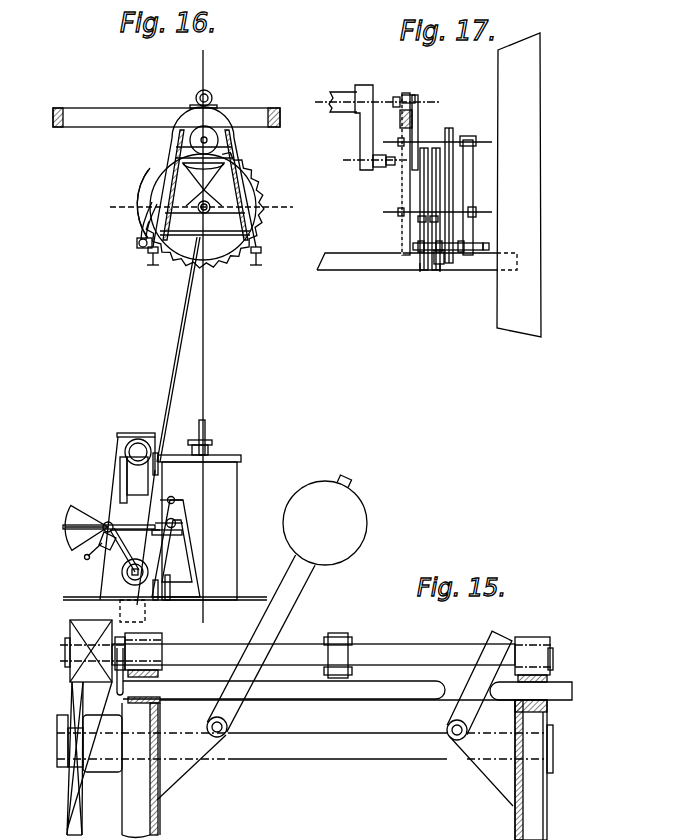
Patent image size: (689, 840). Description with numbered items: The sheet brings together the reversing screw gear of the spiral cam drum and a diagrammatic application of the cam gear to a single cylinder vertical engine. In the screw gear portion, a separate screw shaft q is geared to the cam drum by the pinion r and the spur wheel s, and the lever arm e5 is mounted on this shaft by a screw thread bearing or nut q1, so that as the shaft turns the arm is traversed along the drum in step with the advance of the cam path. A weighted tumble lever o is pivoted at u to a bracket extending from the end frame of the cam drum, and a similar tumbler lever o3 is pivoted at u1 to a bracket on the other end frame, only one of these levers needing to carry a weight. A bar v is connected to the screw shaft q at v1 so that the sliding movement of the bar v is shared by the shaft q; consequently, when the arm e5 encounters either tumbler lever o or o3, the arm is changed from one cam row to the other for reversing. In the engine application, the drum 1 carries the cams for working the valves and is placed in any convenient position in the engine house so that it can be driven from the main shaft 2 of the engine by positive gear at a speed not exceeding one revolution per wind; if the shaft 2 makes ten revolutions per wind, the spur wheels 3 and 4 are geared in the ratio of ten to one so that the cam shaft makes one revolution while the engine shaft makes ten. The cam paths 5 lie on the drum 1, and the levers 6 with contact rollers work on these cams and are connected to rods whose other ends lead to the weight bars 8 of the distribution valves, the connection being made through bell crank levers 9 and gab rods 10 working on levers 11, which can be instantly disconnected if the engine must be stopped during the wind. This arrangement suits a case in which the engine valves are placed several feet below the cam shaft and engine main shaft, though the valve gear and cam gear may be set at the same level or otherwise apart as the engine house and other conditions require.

In FIG. 16, the drum 1 is at (257, 195).
In FIG. 17, the drum 1 is at (432, 190).
In FIG. 17, the main shaft 2 is at (340, 98).
In FIG. 17, the spur wheel 3 is at (449, 131).
In FIG. 17, the spur wheel 4 is at (452, 197).
In FIG. 16, the cam paths 5 is at (225, 266).
In FIG. 17, the cam paths 5 is at (435, 271).
In FIG. 16, the levers 6 is at (137, 220).
In FIG. 17, the levers 6 is at (437, 231).
In FIG. 16, the weight bars 8 is at (89, 555).
In FIG. 16, the bell crank levers 9 is at (175, 499).
In FIG. 16, the gab rods 10 is at (130, 537).
In FIG. 16, the levers 11 is at (106, 522).
In FIG. 16, the pinion r is at (172, 380).
In FIG. 15, the pinion r is at (70, 631).
In FIG. 15, the spur wheel s is at (72, 706).
In FIG. 15, the screw shaft q is at (437, 645).
In FIG. 15, the screw thread bearing or nut q1 is at (322, 644).
In FIG. 15, the lever arm e5 is at (341, 634).
In FIG. 15, the weighted tumble lever o is at (297, 573).
In FIG. 15, the tumbler lever o3 is at (505, 631).
In FIG. 15, the pivot u is at (208, 754).
In FIG. 15, the pivot u1 is at (447, 728).
In FIG. 15, the bar v is at (562, 691).
In FIG. 15, the connection v1 is at (268, 679).